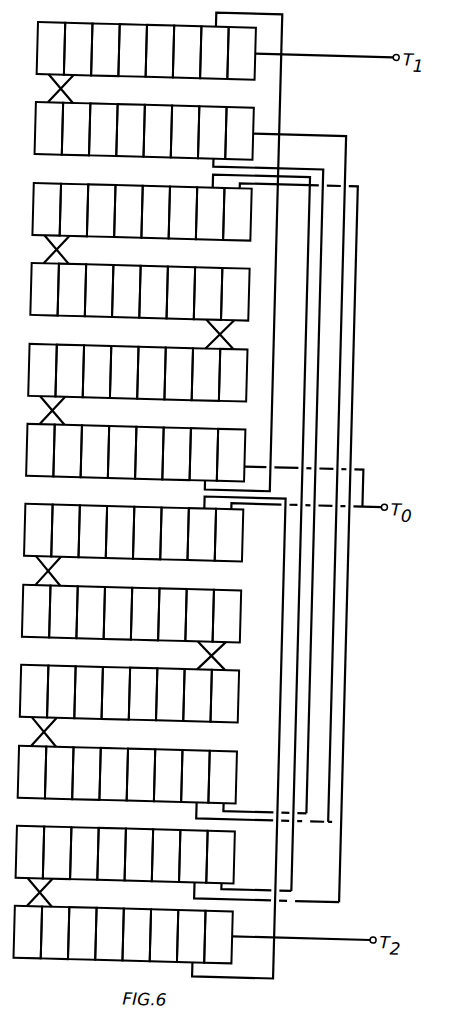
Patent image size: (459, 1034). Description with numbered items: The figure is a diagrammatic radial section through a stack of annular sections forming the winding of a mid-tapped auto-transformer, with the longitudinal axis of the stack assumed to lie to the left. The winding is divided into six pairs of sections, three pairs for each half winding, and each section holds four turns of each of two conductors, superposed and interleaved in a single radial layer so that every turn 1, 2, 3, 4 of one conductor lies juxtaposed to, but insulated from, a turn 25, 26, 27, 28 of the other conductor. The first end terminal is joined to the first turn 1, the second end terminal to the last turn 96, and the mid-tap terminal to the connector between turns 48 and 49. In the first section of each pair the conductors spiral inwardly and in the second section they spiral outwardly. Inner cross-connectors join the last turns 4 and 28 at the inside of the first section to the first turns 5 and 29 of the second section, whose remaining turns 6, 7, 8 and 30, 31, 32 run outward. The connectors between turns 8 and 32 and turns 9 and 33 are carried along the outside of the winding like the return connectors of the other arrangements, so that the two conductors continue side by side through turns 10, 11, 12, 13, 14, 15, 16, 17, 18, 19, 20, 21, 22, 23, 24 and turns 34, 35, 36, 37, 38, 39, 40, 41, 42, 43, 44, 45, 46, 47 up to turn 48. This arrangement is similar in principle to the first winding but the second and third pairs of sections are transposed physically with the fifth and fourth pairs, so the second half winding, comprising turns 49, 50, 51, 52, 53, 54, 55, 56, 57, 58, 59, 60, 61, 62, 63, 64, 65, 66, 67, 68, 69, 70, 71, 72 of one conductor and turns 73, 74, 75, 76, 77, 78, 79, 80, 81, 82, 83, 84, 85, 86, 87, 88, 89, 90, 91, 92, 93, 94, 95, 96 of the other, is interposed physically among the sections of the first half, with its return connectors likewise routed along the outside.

The turn 1 is at (241, 53).
The turn 2 is at (187, 52).
The turn 3 is at (132, 50).
The turn 4 is at (78, 49).
The turn 5 is at (49, 128).
The turn 6 is at (103, 129).
The turn 7 is at (158, 131).
The turn 8 is at (212, 132).
The turn 9 is at (222, 777).
The turn 10 is at (168, 775).
The turn 11 is at (113, 774).
The turn 12 is at (59, 772).
The turn 13 is at (34, 691).
The turn 14 is at (88, 692).
The turn 15 is at (143, 694).
The turn 16 is at (197, 695).
The turn 17 is at (227, 616).
The turn 18 is at (172, 614).
The turn 19 is at (118, 613).
The turn 20 is at (63, 612).
The turn 21 is at (38, 530).
The turn 22 is at (93, 531).
The turn 23 is at (147, 533).
The turn 24 is at (201, 534).
The turn 25 is at (214, 52).
The turn 26 is at (160, 51).
The turn 27 is at (105, 49).
The turn 28 is at (51, 48).
The turn 29 is at (76, 129).
The turn 30 is at (130, 130).
The turn 31 is at (185, 132).
The turn 32 is at (239, 133).
The turn 33 is at (195, 776).
The turn 34 is at (141, 775).
The turn 35 is at (86, 773).
The turn 36 is at (32, 772).
The turn 37 is at (61, 691).
The turn 38 is at (116, 693).
The turn 39 is at (170, 694).
The turn 40 is at (224, 696).
The turn 41 is at (199, 615).
The turn 42 is at (145, 614).
The turn 43 is at (90, 612).
The turn 44 is at (36, 611).
The turn 45 is at (65, 531).
The turn 46 is at (120, 532).
The turn 47 is at (174, 533).
The turn 48 is at (229, 535).
The turn 49 is at (231, 455).
The turn 50 is at (176, 453).
The turn 51 is at (122, 452).
The turn 52 is at (67, 451).
The turn 53 is at (42, 370).
The turn 54 is at (97, 371).
The turn 55 is at (151, 373).
The turn 56 is at (206, 374).
The turn 57 is at (235, 294).
The turn 58 is at (181, 292).
The turn 59 is at (126, 291).
The turn 60 is at (72, 290).
The turn 61 is at (46, 209).
The turn 62 is at (101, 210).
The turn 63 is at (155, 212).
The turn 64 is at (210, 213).
The turn 65 is at (220, 857).
The turn 66 is at (166, 855).
The turn 67 is at (111, 854).
The turn 68 is at (57, 852).
The turn 69 is at (27, 932).
The turn 70 is at (82, 933).
The turn 71 is at (136, 935).
The turn 72 is at (191, 936).
The turn 73 is at (204, 454).
The turn 74 is at (149, 453).
The turn 75 is at (95, 451).
The turn 76 is at (40, 450).
The turn 77 is at (69, 371).
The turn 78 is at (124, 372).
The turn 79 is at (178, 373).
The turn 80 is at (233, 375).
The turn 81 is at (208, 293).
The turn 82 is at (153, 292).
The turn 83 is at (99, 290).
The turn 84 is at (44, 289).
The turn 85 is at (74, 210).
The turn 86 is at (128, 211).
The turn 87 is at (183, 213).
The turn 88 is at (237, 214).
The turn 89 is at (193, 856).
The turn 90 is at (139, 855).
The turn 91 is at (84, 853).
The turn 92 is at (30, 852).
The turn 93 is at (55, 932).
The turn 94 is at (109, 934).
The turn 95 is at (164, 935).
The turn 96 is at (218, 937).